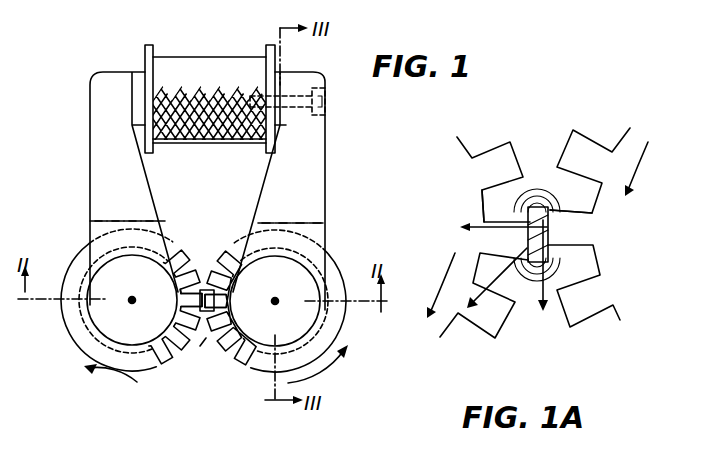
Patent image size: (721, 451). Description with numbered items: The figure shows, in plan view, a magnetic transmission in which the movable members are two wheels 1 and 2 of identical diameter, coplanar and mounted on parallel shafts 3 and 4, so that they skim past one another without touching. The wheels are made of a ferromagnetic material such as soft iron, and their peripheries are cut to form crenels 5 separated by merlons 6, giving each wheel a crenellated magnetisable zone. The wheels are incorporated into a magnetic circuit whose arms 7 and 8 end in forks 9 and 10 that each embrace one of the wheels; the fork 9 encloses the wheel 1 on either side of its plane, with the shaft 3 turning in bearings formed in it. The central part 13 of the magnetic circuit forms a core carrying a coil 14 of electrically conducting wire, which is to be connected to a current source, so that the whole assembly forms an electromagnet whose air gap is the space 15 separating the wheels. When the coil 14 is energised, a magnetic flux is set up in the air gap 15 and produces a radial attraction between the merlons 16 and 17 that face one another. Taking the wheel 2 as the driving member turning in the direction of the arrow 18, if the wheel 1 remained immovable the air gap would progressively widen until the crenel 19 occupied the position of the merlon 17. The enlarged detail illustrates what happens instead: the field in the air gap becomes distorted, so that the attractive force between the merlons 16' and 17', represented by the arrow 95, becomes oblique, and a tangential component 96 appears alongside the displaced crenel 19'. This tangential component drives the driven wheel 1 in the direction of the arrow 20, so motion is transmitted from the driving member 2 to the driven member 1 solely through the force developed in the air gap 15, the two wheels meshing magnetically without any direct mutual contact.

In FIG. 1, the wheel 1 is at (337, 324).
In FIG. 1A, the wheel 1 is at (624, 134).
In FIG. 1, the wheel 2 is at (76, 323).
In FIG. 1A, the wheel 2 is at (451, 143).
In FIG. 1, the shaft 3 is at (279, 305).
In FIG. 1, the shaft 4 is at (128, 304).
In FIG. 1, the crenels 5 is at (173, 356).
In FIG. 1, the merlons 6 is at (212, 346).
In FIG. 1, the arm 7 is at (325, 148).
In FIG. 1, the arm 8 is at (90, 149).
In FIG. 1, the fork 9 is at (325, 233).
In FIG. 1, the fork 10 is at (90, 230).
In FIG. 1, the central part of the magnetic circuit 13 is at (138, 80).
In FIG. 1, the coil 14 is at (200, 62).
In FIG. 1, the air gap 15 is at (207, 290).
In FIG. 1A, the air gap 15 is at (537, 209).
In FIG. 1, the merlon 16 is at (233, 301).
In FIG. 1, the merlon 17 is at (173, 300).
In FIG. 1, the arrow 18 is at (108, 382).
In FIG. 1A, the arrow 18 is at (445, 285).
In FIG. 1, the crenel 19 is at (159, 275).
In FIG. 1, the arrow 20 is at (333, 372).
In FIG. 1A, the arrow 20 is at (643, 170).
In FIG. 1A, the merlon 16' is at (597, 228).
In FIG. 1A, the merlon 17' is at (487, 239).
In FIG. 1A, the crenel 19' is at (463, 205).
In FIG. 1A, the arrow 95 is at (525, 270).
In FIG. 1A, the tangential component 96 is at (566, 292).